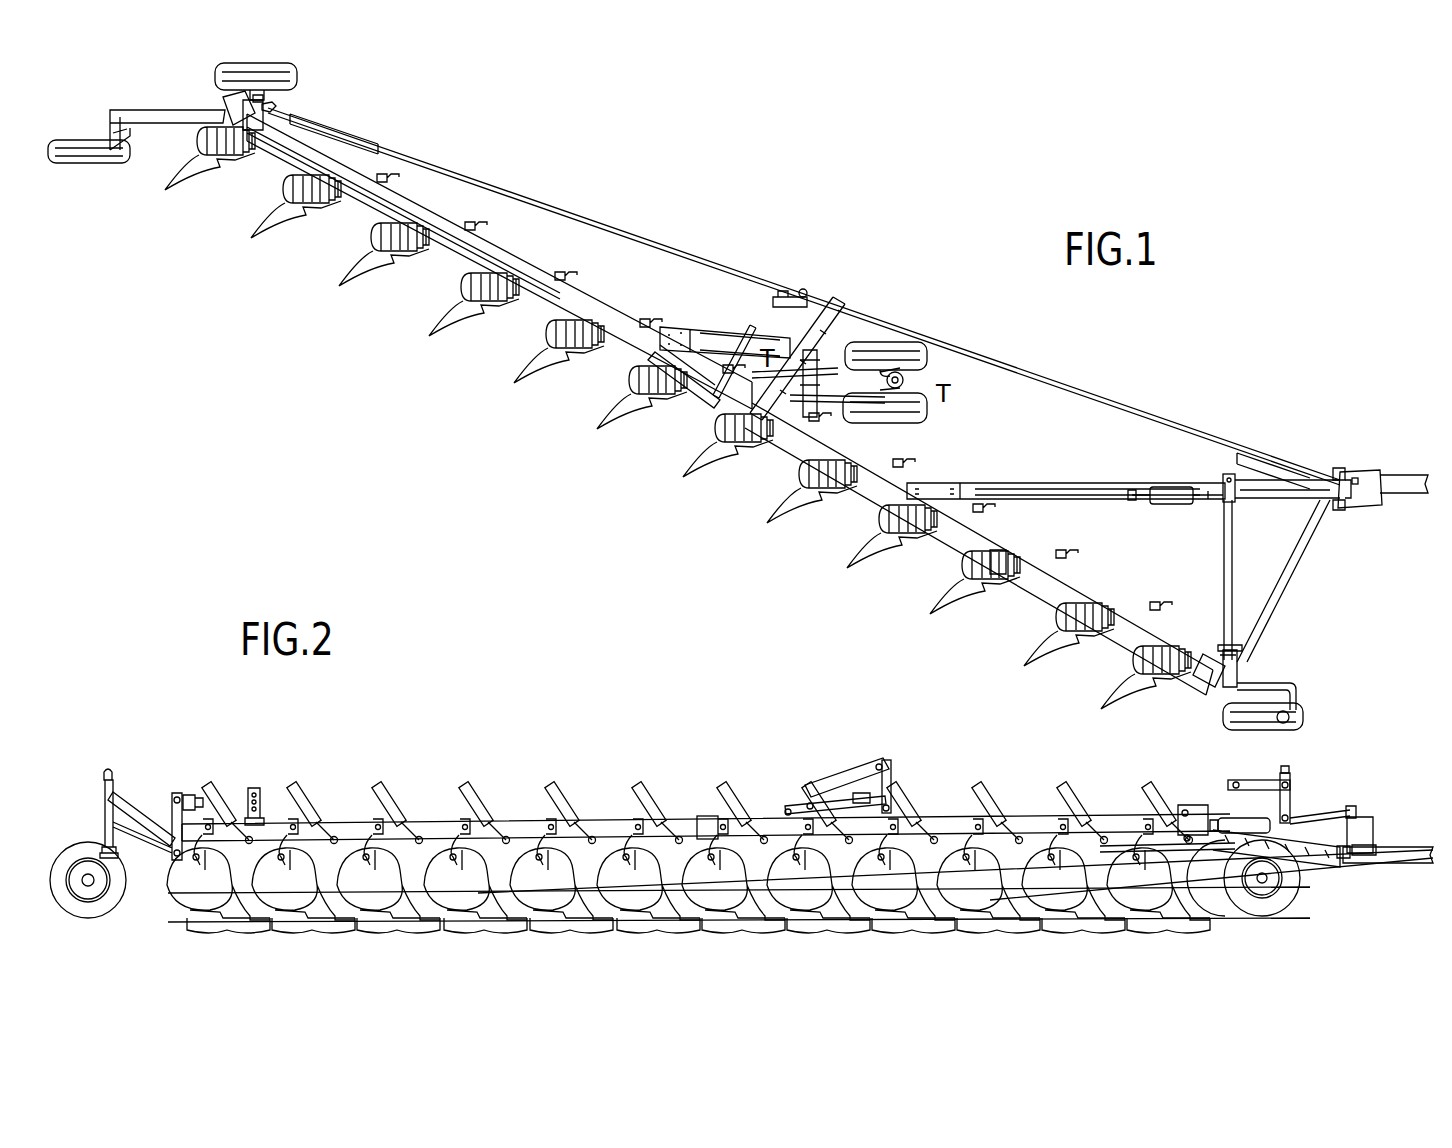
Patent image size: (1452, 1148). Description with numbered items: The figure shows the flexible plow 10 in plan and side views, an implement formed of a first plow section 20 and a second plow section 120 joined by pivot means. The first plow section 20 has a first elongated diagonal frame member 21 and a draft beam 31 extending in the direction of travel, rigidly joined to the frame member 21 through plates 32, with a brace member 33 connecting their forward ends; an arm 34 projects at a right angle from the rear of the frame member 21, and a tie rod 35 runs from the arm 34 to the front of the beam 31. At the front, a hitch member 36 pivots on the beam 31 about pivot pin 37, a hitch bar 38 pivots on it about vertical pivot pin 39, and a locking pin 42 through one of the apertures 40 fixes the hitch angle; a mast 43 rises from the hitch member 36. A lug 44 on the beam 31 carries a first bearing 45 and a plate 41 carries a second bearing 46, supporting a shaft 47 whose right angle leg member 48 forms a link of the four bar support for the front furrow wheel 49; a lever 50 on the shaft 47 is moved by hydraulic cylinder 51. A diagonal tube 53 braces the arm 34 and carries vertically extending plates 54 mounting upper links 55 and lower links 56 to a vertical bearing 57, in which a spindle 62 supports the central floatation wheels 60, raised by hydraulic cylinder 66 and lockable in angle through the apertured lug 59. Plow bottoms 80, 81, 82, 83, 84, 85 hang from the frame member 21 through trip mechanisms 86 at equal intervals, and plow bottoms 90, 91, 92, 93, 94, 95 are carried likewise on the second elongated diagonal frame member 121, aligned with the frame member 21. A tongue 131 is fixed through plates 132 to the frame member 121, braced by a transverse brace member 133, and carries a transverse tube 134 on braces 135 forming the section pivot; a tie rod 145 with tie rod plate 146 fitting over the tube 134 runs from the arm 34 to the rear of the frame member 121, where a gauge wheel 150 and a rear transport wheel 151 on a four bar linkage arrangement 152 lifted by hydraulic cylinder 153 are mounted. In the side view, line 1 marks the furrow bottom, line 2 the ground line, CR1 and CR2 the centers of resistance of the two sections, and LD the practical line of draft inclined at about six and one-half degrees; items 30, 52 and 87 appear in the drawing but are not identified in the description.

In FIG. 1, the flexible plow 10 is at (815, 228).
In FIG. 2, the flexible plow 10 is at (563, 763).
In FIG. 1, the first plow section 20 is at (828, 559).
In FIG. 2, the first plow section 20 is at (978, 793).
In FIG. 1, the first elongated diagonal frame member 21 is at (1013, 543).
In FIG. 2, the first elongated diagonal frame member 21 is at (761, 840).
In FIG. 1, the hitch assembly 30 is at (1155, 448).
In FIG. 1, the beam 31 is at (1098, 484).
In FIG. 1, the plates 32 is at (948, 486).
In FIG. 1, the brace member 33 is at (1286, 578).
In FIG. 1, the arm 34 is at (835, 315).
In FIG. 1, the tie rod 35 is at (1103, 389).
In FIG. 1, the hitch member 36 is at (1368, 481).
In FIG. 2, the hitch member 36 is at (1378, 865).
In FIG. 1, the pivot pin 37 is at (1339, 473).
In FIG. 2, the pivot pin 37 is at (1345, 861).
In FIG. 1, the hitch bar 38 is at (1408, 481).
In FIG. 2, the hitch bar 38 is at (1433, 848).
In FIG. 1, the pivot pin 39 is at (1358, 481).
In FIG. 1, the apertures 40 is at (1383, 508).
In FIG. 2, the apertures 40 is at (348, 796).
In FIG. 2, the plate 41 is at (1291, 915).
In FIG. 1, the locking pin 42 is at (1398, 498).
In FIG. 2, the locking pin 42 is at (1393, 848).
In FIG. 1, the mast 43 is at (1369, 498).
In FIG. 2, the mast 43 is at (1365, 833).
In FIG. 1, the lug 44 is at (1233, 477).
In FIG. 1, the first bearing 45 is at (1225, 483).
In FIG. 1, the second bearing 46 is at (1228, 688).
In FIG. 2, the second bearing 46 is at (1180, 865).
In FIG. 1, the shaft 47 is at (1225, 589).
In FIG. 1, the right angle leg member 48 is at (1235, 703).
In FIG. 2, the right angle leg member 48 is at (1295, 803).
In FIG. 1, the front furrow wheel 49 is at (1281, 735).
In FIG. 2, the front furrow wheel 49 is at (1265, 908).
In FIG. 1, the lever 50 is at (1215, 503).
In FIG. 2, the lever 50 is at (1238, 818).
In FIG. 1, the hydraulic cylinder 51 is at (1171, 508).
In FIG. 2, the hydraulic cylinder 51 is at (1218, 821).
In FIG. 1, the link rod 52 is at (1280, 501).
In FIG. 2, the link rod 52 is at (1348, 815).
In FIG. 1, the diagonal tube 53 is at (798, 443).
In FIG. 1, the vertically extending plates 54 is at (758, 381).
In FIG. 1, the upper links 55 is at (903, 355).
In FIG. 2, the upper links 55 is at (833, 808).
In FIG. 2, the lower links 56 is at (883, 803).
In FIG. 1, the vertical bearing 57 is at (908, 388).
In FIG. 2, the vertical bearing 57 is at (895, 803).
In FIG. 1, the horizontally extending lug 59 is at (971, 413).
In FIG. 1, the central floatation wheels 60 is at (993, 417).
In FIG. 2, the central floatation wheels 60 is at (905, 841).
In FIG. 1, the vertical spindle 62 is at (908, 375).
In FIG. 2, the vertical spindle 62 is at (873, 783).
In FIG. 2, the hydraulic cylinder 66 is at (803, 803).
In FIG. 1, the plow bottom 80 is at (1145, 693).
In FIG. 2, the plow bottom 80 is at (1188, 903).
In FIG. 1, the plow bottom 81 is at (1058, 653).
In FIG. 2, the plow bottom 81 is at (1073, 872).
In FIG. 1, the plow bottom 82 is at (968, 608).
In FIG. 2, the plow bottom 82 is at (953, 863).
In FIG. 1, the plow bottom 83 is at (878, 558).
In FIG. 2, the plow bottom 83 is at (878, 905).
In FIG. 1, the plow bottom 84 is at (798, 523).
In FIG. 2, the plow bottom 84 is at (793, 905).
In FIG. 1, the plow bottom 85 is at (695, 458).
In FIG. 2, the plow bottom 85 is at (708, 905).
In FIG. 1, the trip mechanism 86 is at (968, 569).
In FIG. 2, the trip mechanism 86 is at (1003, 796).
In FIG. 2, the plow shank 87 is at (1043, 853).
In FIG. 1, the plow bottom 90 is at (615, 403).
In FIG. 2, the plow bottom 90 is at (623, 905).
In FIG. 1, the plow bottom 91 is at (523, 358).
In FIG. 2, the plow bottom 91 is at (543, 863).
In FIG. 1, the plow bottom 92 is at (448, 313).
In FIG. 2, the plow bottom 92 is at (465, 858).
In FIG. 1, the plow bottom 93 is at (358, 268).
In FIG. 2, the plow bottom 93 is at (363, 905).
In FIG. 1, the plow bottom 94 is at (283, 225).
In FIG. 2, the plow bottom 94 is at (278, 905).
In FIG. 1, the plow bottom 95 is at (213, 173).
In FIG. 2, the plow bottom 95 is at (178, 896).
In FIG. 1, the second plow section 120 is at (423, 303).
In FIG. 1, the second elongated diagonal frame member 121 is at (516, 270).
In FIG. 1, the tongue 131 is at (665, 328).
In FIG. 1, the plates 132 is at (658, 351).
In FIG. 1, the transverse brace member 133 is at (751, 326).
In FIG. 1, the transverse tube 134 is at (828, 331).
In FIG. 1, the braces 135 is at (788, 298).
In FIG. 1, the tie rod 145 is at (693, 257).
In FIG. 1, the tie rod plate 146 is at (811, 293).
In FIG. 1, the gauge wheel 150 is at (298, 78).
In FIG. 2, the gauge wheel 150 is at (208, 803).
In FIG. 1, the rear transport wheel 151 is at (88, 165).
In FIG. 2, the rear transport wheel 151 is at (91, 921).
In FIG. 1, the four bar linkage arrangement 152 is at (115, 109).
In FIG. 2, the four bar linkage arrangement 152 is at (115, 788).
In FIG. 1, the hydraulic cylinder 153 is at (203, 125).
In FIG. 2, the hydraulic cylinder 153 is at (188, 813).
In FIG. 2, the furrow bottom line 1 is at (739, 919).
In FIG. 2, the ground line 2 is at (742, 889).
In FIG. 2, the land line LD is at (942, 874).
In FIG. 2, the center of resistance of first plow section CR1 is at (993, 901).
In FIG. 2, the center of resistance of second plow section CR2 is at (481, 895).